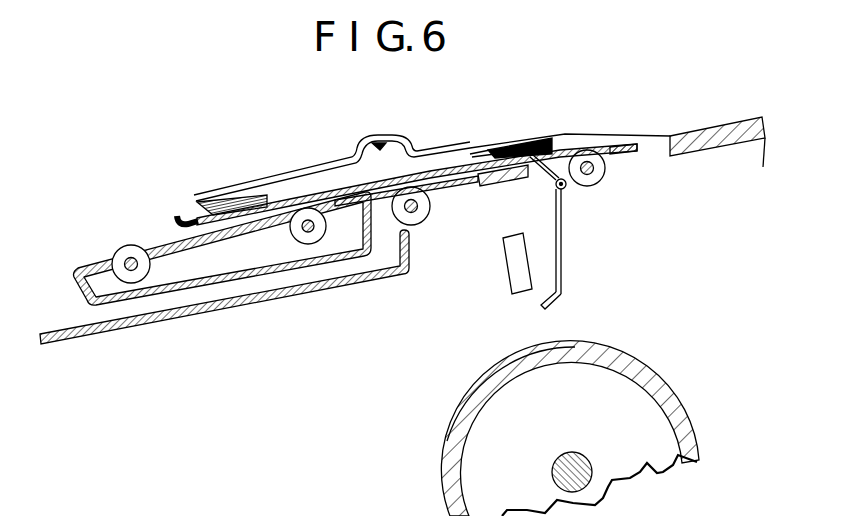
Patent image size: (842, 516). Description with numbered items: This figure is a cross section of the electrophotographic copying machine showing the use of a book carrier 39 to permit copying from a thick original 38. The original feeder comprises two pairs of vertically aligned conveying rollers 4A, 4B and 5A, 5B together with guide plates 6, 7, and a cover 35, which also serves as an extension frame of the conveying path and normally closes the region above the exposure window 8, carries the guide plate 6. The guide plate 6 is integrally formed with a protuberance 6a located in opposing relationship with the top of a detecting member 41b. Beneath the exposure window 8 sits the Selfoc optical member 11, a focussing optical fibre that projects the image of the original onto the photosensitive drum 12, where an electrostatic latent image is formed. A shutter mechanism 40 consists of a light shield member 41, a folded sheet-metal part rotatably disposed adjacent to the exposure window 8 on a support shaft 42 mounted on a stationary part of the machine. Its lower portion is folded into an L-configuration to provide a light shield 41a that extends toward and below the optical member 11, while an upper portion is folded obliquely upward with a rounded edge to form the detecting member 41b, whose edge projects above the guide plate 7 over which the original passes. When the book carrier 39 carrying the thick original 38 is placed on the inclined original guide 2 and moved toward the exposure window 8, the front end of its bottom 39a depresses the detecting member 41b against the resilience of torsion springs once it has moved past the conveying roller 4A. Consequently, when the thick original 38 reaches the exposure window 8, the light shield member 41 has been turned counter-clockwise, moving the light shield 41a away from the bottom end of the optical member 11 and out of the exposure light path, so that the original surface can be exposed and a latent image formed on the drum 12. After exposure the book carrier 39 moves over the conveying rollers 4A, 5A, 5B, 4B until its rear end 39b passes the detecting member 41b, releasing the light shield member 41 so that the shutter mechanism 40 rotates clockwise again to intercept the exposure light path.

The original guide 2 is at (735, 130).
The conveying roller 4A is at (603, 168).
The conveying roller 4B is at (120, 253).
The conveying roller 5A is at (423, 218).
The conveying roller 5B is at (295, 233).
The guide plate 6 is at (168, 243).
The protuberance 6a is at (186, 245).
The guide plate 7 is at (437, 189).
The exposure window 8 is at (503, 190).
The optical member 11 is at (513, 282).
The photosensitive drum 12 is at (647, 372).
The cover 35 is at (149, 216).
The thick original 38 is at (492, 144).
The book carrier 39 is at (570, 142).
The bottom of book carrier 39a is at (178, 216).
The rear end of book carrier 39b is at (610, 140).
The shutter mechanism 40 is at (577, 237).
The light shield member 41 is at (562, 262).
The light shield 41a is at (555, 298).
The detecting member 41b is at (542, 177).
The support shaft 42 is at (566, 188).